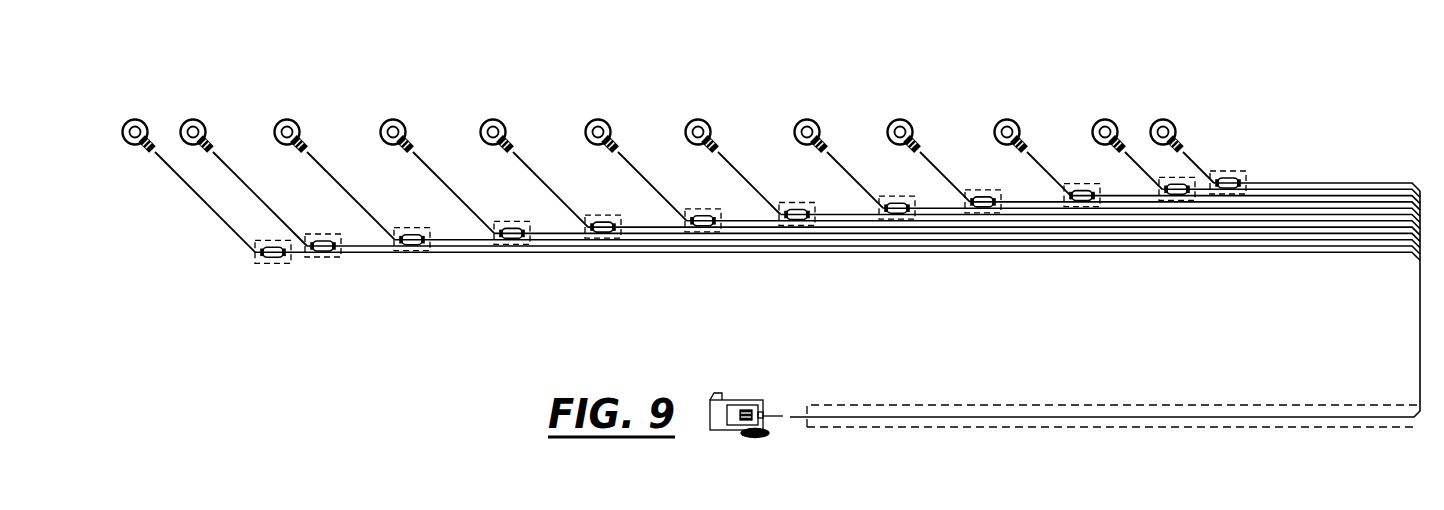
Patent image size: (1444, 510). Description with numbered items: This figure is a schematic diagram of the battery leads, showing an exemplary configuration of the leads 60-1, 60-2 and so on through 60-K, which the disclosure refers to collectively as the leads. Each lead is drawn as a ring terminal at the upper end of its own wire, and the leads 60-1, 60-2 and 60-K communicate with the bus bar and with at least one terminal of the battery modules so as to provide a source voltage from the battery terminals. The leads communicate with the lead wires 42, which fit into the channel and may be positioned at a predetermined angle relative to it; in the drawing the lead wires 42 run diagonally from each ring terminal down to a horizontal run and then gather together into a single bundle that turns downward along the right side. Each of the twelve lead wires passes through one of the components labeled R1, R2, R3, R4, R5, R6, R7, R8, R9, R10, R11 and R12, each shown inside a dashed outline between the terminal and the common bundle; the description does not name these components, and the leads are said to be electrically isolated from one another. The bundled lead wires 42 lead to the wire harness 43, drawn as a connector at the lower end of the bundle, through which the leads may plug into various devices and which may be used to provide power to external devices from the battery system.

The lead 60-1 is at (137, 118).
The lead 60-2 is at (196, 118).
The lead 60-K is at (1165, 119).
The lead wires 42 is at (1017, 258).
The wire harness 43 is at (737, 403).
The resistor R1 is at (1315, 173).
The resistor R2 is at (1289, 179).
The resistor R3 is at (1242, 186).
The resistor R4 is at (1192, 192).
The resistor R5 is at (1149, 198).
The resistor R6 is at (1099, 205).
The resistor R7 is at (1052, 211).
The resistor R8 is at (1002, 217).
The resistor R9 is at (957, 223).
The resistor R10 is at (907, 230).
The resistor R11 is at (862, 236).
The resistor R12 is at (837, 242).